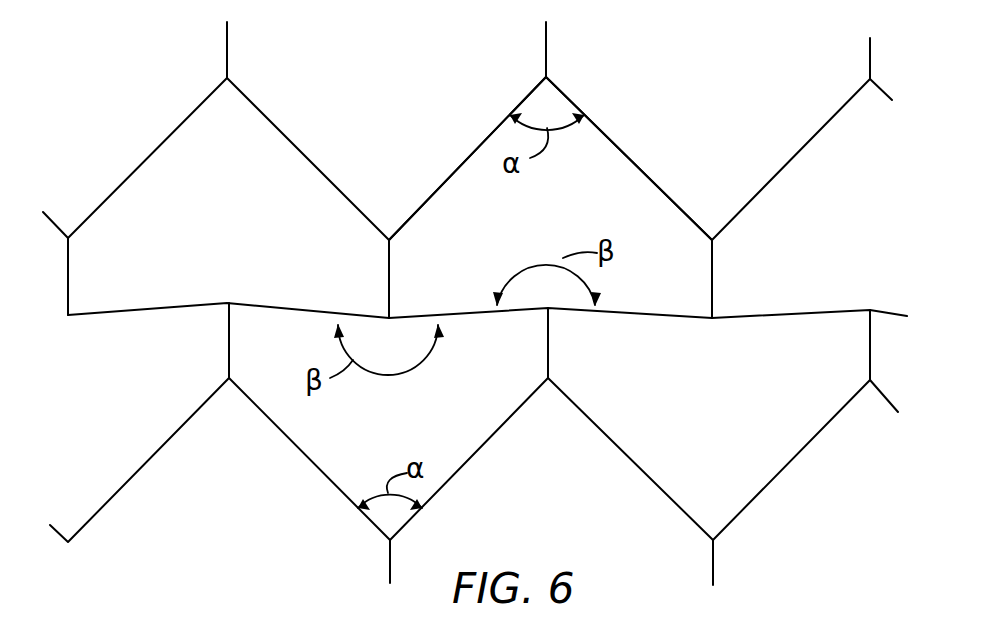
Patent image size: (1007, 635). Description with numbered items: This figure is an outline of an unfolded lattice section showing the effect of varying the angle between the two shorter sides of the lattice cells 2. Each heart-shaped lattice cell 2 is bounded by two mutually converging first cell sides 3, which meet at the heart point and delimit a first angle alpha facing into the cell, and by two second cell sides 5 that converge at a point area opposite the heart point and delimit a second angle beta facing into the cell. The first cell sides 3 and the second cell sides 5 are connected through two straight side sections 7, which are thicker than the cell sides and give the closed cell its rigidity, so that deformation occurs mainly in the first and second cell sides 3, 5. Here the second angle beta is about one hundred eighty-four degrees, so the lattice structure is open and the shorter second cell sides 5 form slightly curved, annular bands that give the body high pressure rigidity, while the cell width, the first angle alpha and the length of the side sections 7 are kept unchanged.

The lattice cell 2 is at (208, 197).
The first cell sides 3 is at (488, 133).
The second cell sides 5 is at (467, 315).
The side sections 7 is at (546, 55).